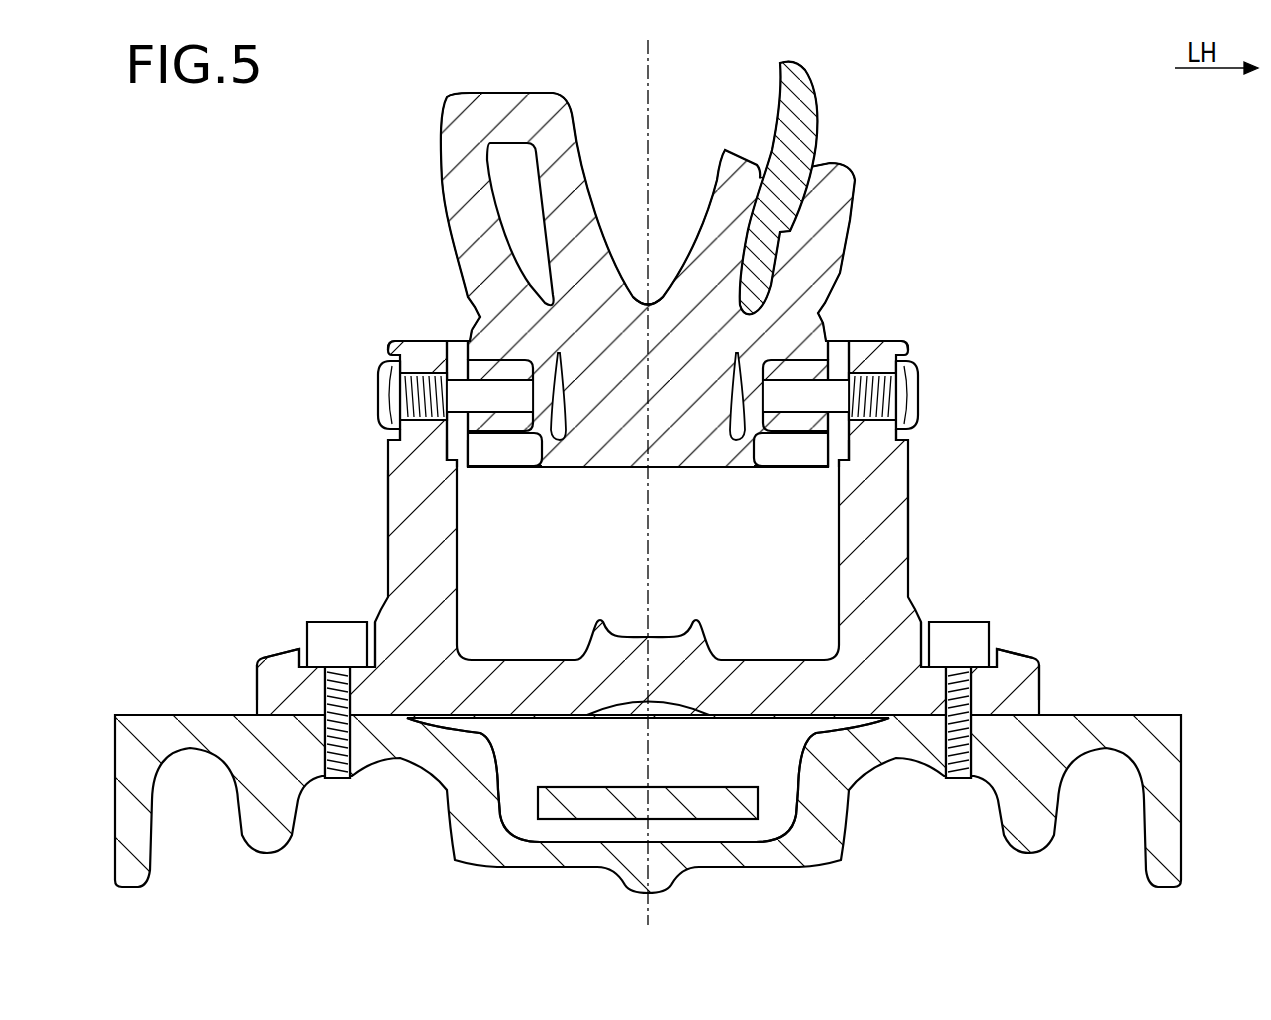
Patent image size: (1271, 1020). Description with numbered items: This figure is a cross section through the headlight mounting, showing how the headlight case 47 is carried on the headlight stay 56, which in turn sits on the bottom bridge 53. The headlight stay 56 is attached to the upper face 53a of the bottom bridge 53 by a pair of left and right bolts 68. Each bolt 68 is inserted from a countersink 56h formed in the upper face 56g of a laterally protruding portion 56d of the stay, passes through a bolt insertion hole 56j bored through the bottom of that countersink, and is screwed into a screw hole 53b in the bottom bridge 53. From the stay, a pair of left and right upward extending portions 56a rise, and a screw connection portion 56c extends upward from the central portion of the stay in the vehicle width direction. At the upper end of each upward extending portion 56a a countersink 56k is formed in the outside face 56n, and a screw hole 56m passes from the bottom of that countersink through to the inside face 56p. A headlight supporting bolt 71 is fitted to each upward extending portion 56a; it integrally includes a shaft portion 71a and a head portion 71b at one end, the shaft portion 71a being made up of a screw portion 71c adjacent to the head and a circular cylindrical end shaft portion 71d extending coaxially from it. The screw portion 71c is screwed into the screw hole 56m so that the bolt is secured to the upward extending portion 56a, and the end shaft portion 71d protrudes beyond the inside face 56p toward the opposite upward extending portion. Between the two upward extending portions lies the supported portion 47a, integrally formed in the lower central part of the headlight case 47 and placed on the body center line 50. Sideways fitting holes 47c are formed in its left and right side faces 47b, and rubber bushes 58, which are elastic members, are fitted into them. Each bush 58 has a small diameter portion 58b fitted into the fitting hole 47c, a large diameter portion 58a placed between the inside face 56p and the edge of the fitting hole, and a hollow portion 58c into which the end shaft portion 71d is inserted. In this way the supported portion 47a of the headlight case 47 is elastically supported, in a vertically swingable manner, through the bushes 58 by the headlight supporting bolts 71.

The headlight case 47 is at (455, 93).
The supported portion 47a is at (514, 125).
The side faces 47b is at (455, 465).
The fitting holes 47c is at (505, 395).
The body center line 50 is at (653, 52).
The bottom bridge 53 is at (595, 870).
The upper face 53a is at (1130, 715).
The screw holes 53b is at (337, 780).
The headlight stay 56 is at (533, 723).
The upward extending portions 56a is at (428, 338).
The screw connection portion 56c is at (683, 640).
The laterally protruding portions 56d is at (254, 660).
The upper face 56g is at (272, 655).
The countersink 56h is at (368, 640).
The bolt insertion hole 56j is at (300, 655).
The countersink 56k is at (385, 386).
The screw hole 56m is at (394, 347).
The outside face 56n is at (390, 456).
The inside face 56p is at (448, 456).
The bush 58 is at (458, 336).
The large diameter portion 58a is at (458, 372).
The small diameter portion 58b is at (470, 480).
The hollow portion 58c is at (540, 440).
The bolts 68 is at (335, 640).
The headlight supporting bolt 71 is at (376, 396).
The shaft portion 71a is at (589, 207).
The head portion 71b is at (388, 408).
The screw portion 71c is at (392, 436).
The end shaft portion 71d is at (610, 265).